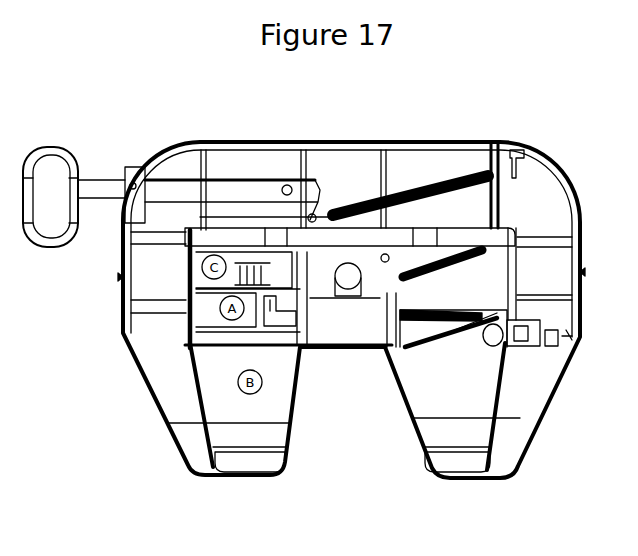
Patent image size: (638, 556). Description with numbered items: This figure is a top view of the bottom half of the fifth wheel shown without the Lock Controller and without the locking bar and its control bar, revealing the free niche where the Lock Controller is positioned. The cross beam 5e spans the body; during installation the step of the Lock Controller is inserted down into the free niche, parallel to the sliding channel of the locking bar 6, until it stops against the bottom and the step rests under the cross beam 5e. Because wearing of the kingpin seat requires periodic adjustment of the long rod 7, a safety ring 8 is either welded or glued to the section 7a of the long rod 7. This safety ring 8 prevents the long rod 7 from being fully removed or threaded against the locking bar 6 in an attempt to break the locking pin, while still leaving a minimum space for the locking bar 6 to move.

The cross beam 5e is at (247, 240).
The locking bar 6 is at (282, 313).
The long rod 7 is at (556, 345).
The section of the long rod 7a is at (497, 330).
The safety ring 8 is at (489, 345).